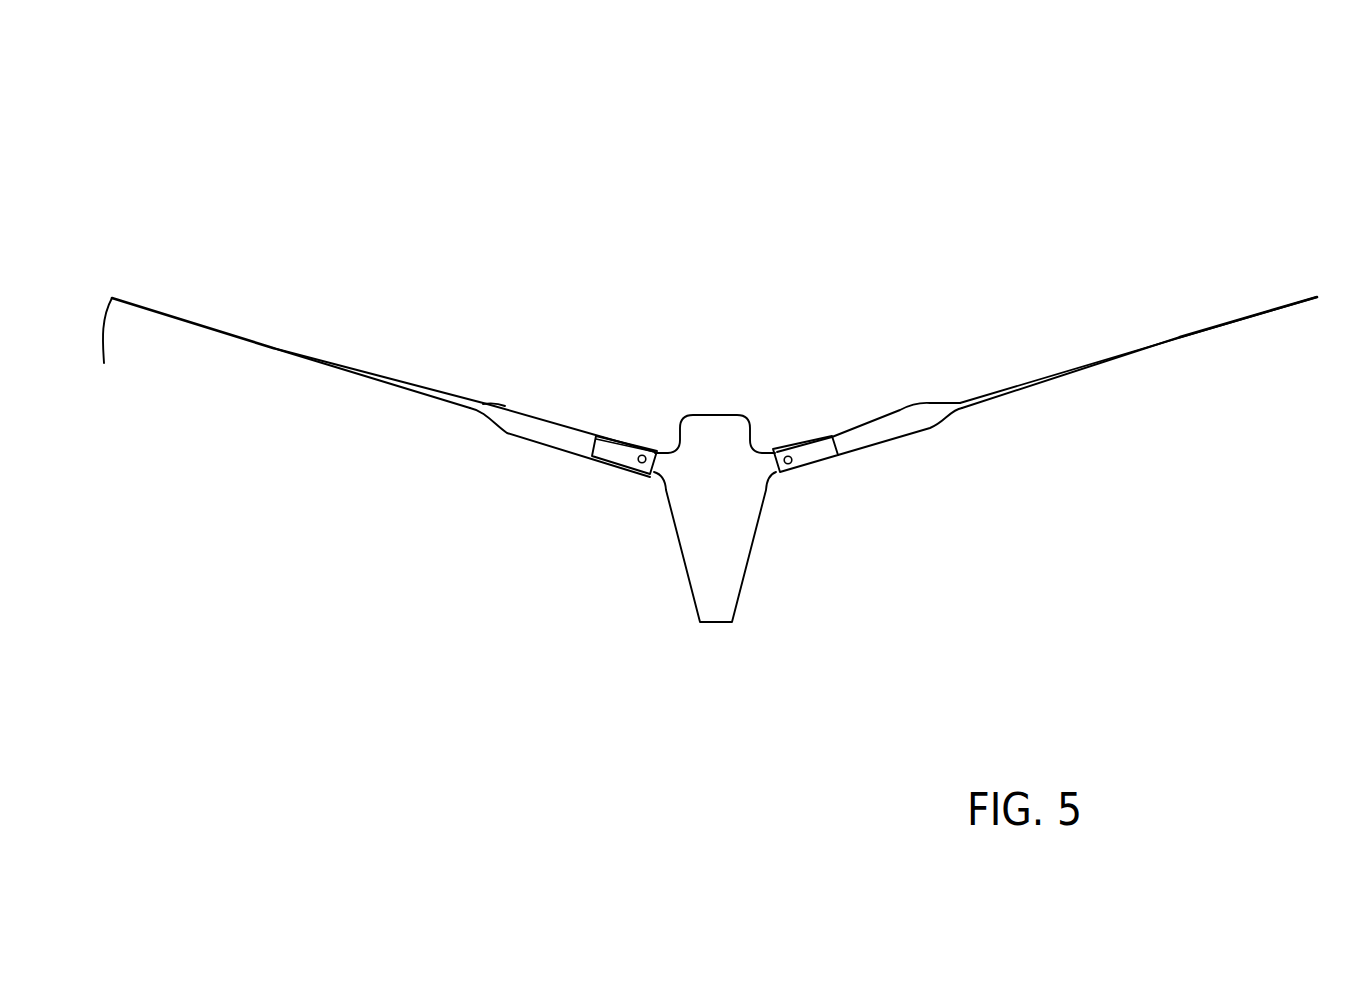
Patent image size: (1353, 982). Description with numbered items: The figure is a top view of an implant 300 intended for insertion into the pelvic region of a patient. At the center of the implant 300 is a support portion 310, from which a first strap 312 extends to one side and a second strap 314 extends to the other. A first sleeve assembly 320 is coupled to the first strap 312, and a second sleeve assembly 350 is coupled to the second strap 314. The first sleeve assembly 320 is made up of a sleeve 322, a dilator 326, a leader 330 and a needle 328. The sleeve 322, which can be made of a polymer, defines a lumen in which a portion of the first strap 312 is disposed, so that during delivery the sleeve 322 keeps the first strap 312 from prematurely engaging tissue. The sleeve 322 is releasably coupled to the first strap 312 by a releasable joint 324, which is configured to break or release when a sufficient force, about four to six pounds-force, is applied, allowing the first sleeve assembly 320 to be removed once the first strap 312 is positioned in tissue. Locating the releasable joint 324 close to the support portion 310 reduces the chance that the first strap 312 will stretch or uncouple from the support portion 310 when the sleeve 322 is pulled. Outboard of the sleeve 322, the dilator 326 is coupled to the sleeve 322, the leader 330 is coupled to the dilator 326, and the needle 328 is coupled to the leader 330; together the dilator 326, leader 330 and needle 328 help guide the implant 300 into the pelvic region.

The implant 300 is at (236, 117).
The support portion 310 is at (717, 607).
The first strap 312 is at (602, 450).
The second strap 314 is at (820, 453).
The first sleeve assembly 320 is at (503, 433).
The sleeve 322 is at (538, 428).
The releasable joint 324 is at (643, 455).
The dilator 326 is at (485, 404).
The needle 328 is at (104, 363).
The leader 330 is at (273, 348).
The second sleeve assembly 350 is at (962, 408).